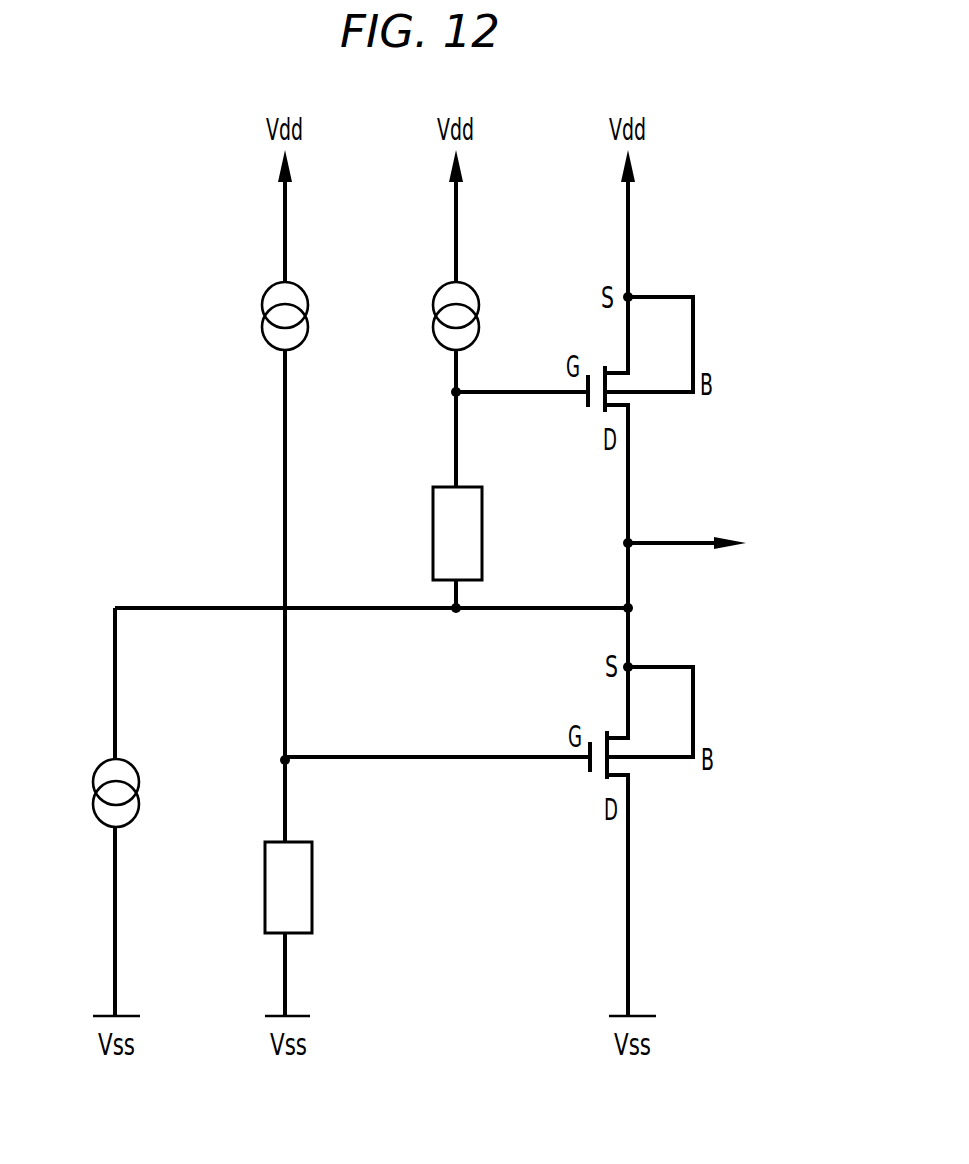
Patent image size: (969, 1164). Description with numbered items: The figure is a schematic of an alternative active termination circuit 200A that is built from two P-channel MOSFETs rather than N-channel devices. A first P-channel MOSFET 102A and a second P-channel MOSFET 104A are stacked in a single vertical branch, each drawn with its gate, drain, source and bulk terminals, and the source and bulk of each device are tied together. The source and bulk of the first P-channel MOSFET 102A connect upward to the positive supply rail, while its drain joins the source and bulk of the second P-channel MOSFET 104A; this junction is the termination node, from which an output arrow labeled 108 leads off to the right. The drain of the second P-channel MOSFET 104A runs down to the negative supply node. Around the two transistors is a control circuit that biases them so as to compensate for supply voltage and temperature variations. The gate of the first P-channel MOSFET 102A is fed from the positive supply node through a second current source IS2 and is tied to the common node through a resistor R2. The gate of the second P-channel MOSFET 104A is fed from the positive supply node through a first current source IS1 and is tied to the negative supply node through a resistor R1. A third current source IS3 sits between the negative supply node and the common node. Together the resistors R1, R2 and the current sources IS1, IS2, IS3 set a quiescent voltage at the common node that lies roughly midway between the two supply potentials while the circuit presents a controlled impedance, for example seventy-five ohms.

The alternative active termination circuit 200A is at (170, 197).
The first P-channel MOSFET 102A is at (677, 235).
The second P-channel MOSFET 104A is at (692, 872).
The output node 108 is at (714, 548).
The first current source IS1 is at (266, 287).
The second current source IS2 is at (438, 287).
The third current source IS3 is at (96, 822).
The resistor R1 is at (288, 887).
The resistor R2 is at (457, 533).